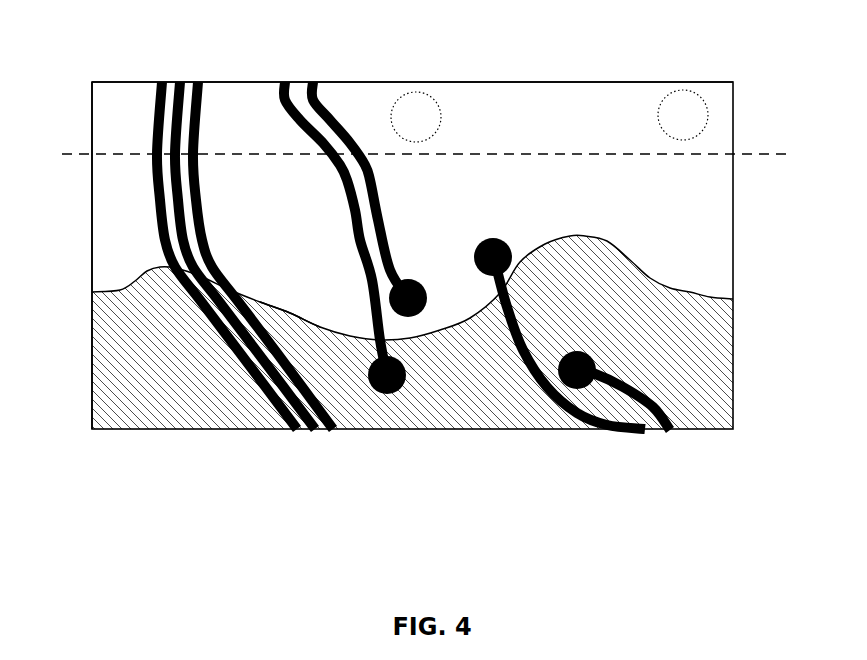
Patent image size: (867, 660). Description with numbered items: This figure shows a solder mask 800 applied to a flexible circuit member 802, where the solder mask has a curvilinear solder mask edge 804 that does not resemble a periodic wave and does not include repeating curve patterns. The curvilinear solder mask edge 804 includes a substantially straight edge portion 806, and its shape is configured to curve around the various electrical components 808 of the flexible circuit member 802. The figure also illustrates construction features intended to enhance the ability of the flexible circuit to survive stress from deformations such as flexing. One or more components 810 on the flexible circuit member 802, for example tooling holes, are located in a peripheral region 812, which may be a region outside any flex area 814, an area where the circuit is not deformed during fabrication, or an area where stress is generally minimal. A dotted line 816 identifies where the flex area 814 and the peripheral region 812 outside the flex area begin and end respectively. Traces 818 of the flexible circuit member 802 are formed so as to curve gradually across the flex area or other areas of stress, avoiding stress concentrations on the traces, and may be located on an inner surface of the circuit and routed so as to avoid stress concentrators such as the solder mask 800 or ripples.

The solder mask 800 is at (703, 392).
The flexible circuit member 802 is at (700, 208).
The curvilinear solder mask edge 804 is at (648, 285).
The substantially straight edge portion 806 is at (290, 312).
The electrical components 808 is at (502, 250).
The components 810 is at (417, 92).
The peripheral region 812 is at (752, 112).
The flex area 814 is at (80, 190).
The dotted line 816 is at (70, 153).
The traces 818 is at (157, 105).